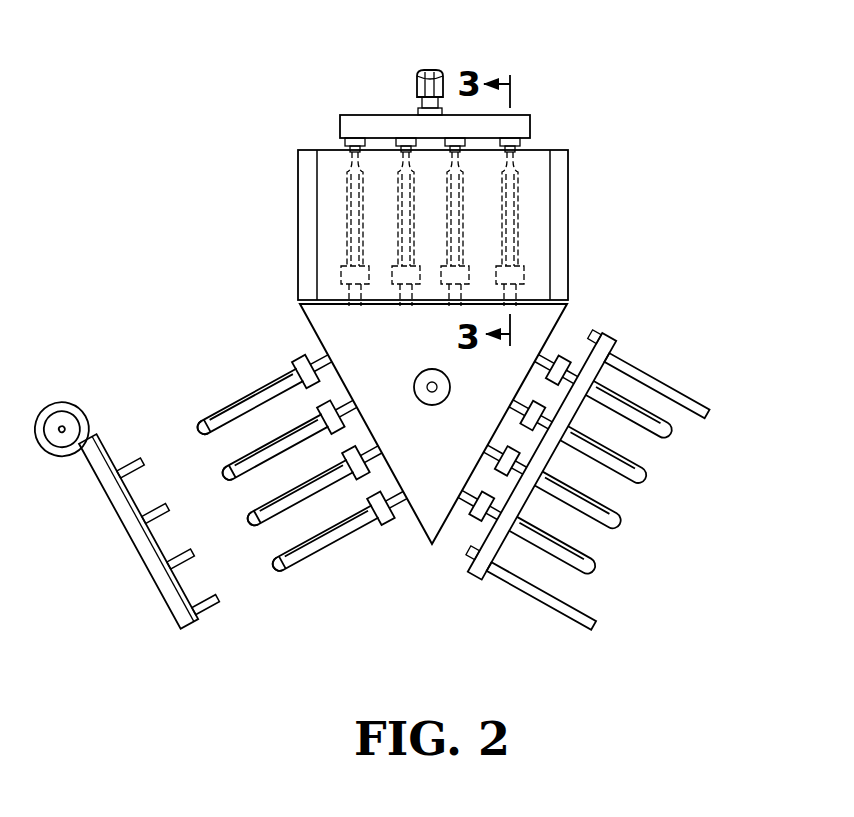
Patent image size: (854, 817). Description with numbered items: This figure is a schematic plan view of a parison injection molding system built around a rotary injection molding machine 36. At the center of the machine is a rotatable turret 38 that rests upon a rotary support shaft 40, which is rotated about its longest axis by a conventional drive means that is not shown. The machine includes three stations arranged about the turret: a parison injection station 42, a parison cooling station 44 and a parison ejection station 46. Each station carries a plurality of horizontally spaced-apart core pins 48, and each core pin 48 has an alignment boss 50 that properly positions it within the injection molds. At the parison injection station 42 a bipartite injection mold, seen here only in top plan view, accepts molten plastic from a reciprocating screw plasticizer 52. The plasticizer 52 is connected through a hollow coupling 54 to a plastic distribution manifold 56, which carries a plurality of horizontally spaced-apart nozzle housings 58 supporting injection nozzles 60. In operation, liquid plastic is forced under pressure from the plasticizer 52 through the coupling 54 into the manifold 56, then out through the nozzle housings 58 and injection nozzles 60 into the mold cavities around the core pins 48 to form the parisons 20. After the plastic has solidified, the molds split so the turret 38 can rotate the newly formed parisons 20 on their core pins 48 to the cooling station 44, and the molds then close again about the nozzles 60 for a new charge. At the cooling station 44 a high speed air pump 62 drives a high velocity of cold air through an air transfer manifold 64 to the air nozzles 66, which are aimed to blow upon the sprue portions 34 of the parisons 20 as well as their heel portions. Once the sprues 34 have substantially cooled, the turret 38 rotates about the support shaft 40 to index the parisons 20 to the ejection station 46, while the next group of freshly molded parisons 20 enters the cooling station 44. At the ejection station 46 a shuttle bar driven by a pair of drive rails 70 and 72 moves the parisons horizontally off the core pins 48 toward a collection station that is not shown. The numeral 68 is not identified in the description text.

The parison 20 is at (502, 176).
The sprue portion 34 is at (274, 567).
The rotary injection molding machine 36 is at (196, 178).
The rotatable turret 38 is at (572, 319).
The rotary support shaft 40 is at (451, 389).
The parison injection station 42 is at (574, 241).
The parison cooling station 44 is at (347, 558).
The parison ejection station 46 is at (664, 367).
The core pin 48 is at (500, 255).
The alignment boss 50 is at (419, 290).
The reciprocating screw plasticizer 52 is at (416, 78).
The hollow coupling 54 is at (418, 110).
The plastic distribution manifold 56 is at (528, 118).
The nozzle housing 58 is at (534, 148).
The injection nozzle 60 is at (343, 146).
The high speed air pump 62 is at (72, 400).
The air transfer manifold 64 is at (141, 546).
The air nozzle 66 is at (195, 566).
The rail bar 68 is at (548, 454).
The drive rail 70 is at (707, 411).
The drive rail 72 is at (592, 623).